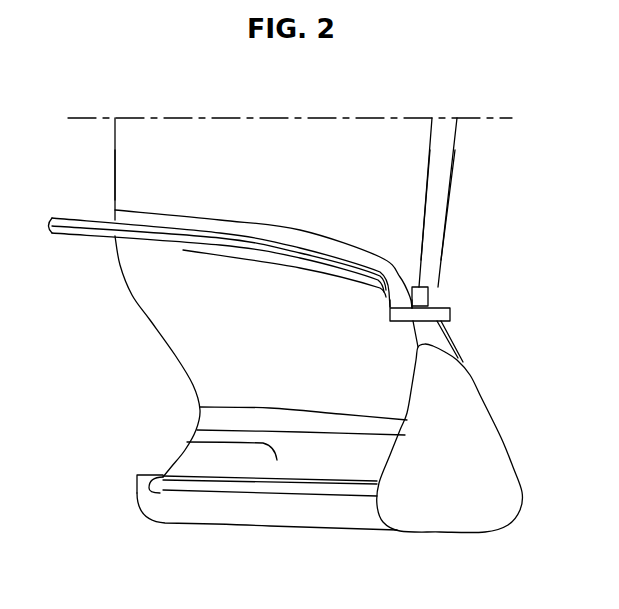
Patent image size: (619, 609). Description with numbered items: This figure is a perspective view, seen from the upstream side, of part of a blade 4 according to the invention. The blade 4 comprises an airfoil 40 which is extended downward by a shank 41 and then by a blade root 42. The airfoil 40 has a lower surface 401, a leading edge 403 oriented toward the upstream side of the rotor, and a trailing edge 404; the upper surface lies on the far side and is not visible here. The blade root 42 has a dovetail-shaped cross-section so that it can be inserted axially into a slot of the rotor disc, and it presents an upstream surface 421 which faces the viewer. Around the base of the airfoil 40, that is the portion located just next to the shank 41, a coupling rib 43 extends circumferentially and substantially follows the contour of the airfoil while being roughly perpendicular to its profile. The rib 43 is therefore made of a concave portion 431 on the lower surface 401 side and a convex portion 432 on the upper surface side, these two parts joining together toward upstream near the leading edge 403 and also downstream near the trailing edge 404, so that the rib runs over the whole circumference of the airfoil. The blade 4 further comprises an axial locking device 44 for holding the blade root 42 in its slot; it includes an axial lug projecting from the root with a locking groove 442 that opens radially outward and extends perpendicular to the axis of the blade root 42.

The blade 4 is at (570, 263).
The airfoil 40 is at (237, 162).
The lower surface 401 is at (367, 177).
The leading edge 403 is at (437, 210).
The trailing edge 404 is at (114, 165).
The shank 41 is at (237, 303).
The concave portion 431 is at (193, 250).
The coupling rib 43 is at (467, 318).
The convex portion 432 is at (440, 292).
The blade root 42 is at (187, 447).
The upstream surface 421 is at (465, 460).
The axial locking device 44 is at (128, 512).
The locking groove 442 is at (159, 471).